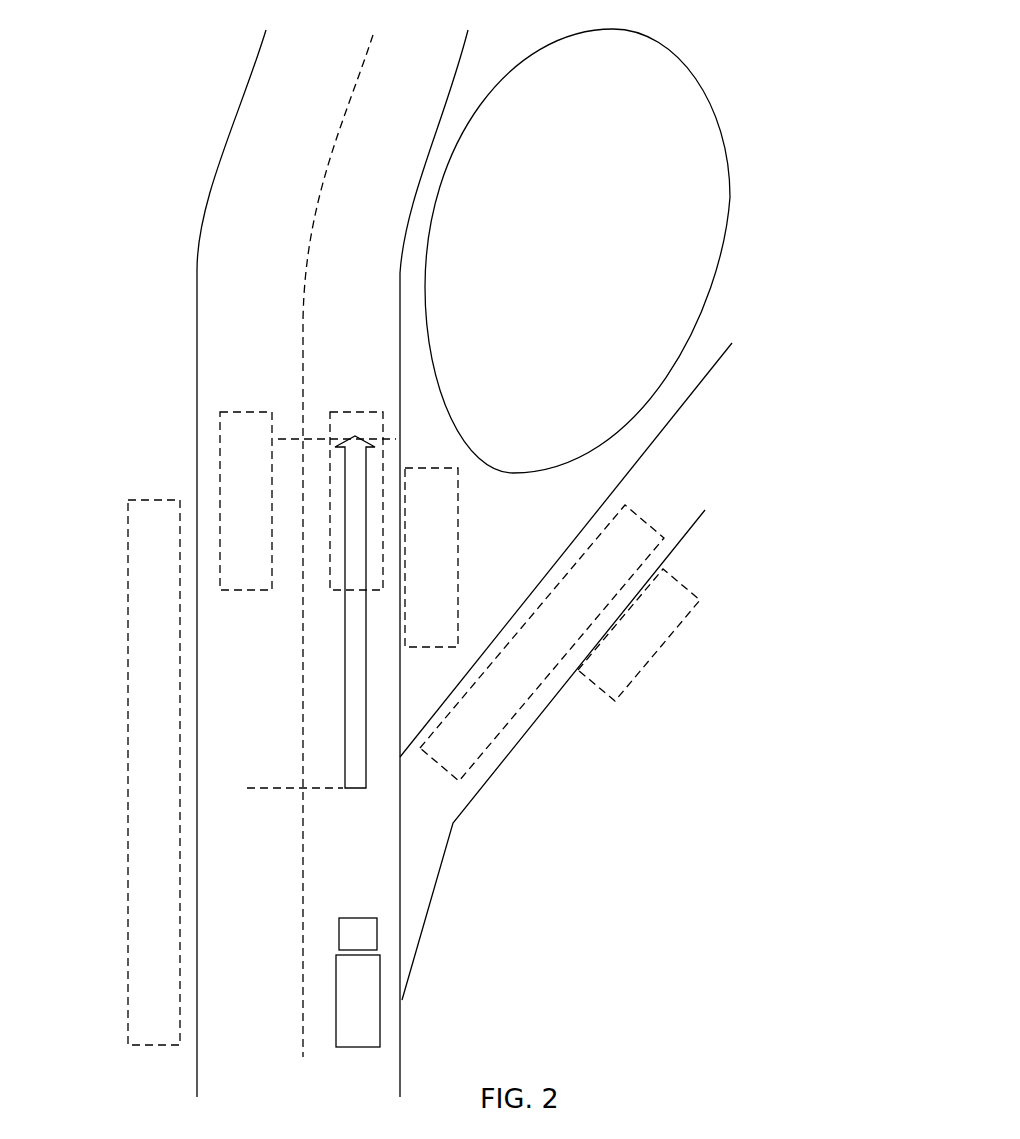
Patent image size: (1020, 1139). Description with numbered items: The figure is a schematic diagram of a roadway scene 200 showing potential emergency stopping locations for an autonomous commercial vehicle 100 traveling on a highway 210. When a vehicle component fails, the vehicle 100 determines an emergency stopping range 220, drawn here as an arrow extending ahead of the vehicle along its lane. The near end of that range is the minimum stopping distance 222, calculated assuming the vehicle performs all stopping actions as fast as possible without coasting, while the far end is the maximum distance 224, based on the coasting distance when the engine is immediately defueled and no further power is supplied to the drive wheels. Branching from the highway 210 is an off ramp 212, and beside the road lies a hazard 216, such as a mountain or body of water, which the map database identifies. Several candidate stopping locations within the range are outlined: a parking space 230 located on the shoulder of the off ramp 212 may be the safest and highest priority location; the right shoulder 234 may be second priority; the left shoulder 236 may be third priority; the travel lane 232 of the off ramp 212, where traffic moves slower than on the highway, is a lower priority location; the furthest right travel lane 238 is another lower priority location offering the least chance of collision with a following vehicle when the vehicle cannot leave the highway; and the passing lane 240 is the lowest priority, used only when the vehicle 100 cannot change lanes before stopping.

The autonomous commercial vehicle 100 is at (337, 970).
The driving scene 200 is at (182, 96).
The highway 210 is at (198, 470).
The off ramp 212 is at (480, 792).
The hazard 216 is at (577, 251).
The emergency stopping range 220 is at (344, 642).
The minimum stopping distance 222 is at (290, 788).
The maximum distance 224 is at (317, 439).
The parking space 230 is at (620, 665).
The travel lane of the off ramp 232 is at (518, 705).
The right shoulder 234 is at (458, 570).
The left shoulder 236 is at (128, 635).
The travel lane 238 is at (358, 412).
The passing lane 240 is at (243, 410).